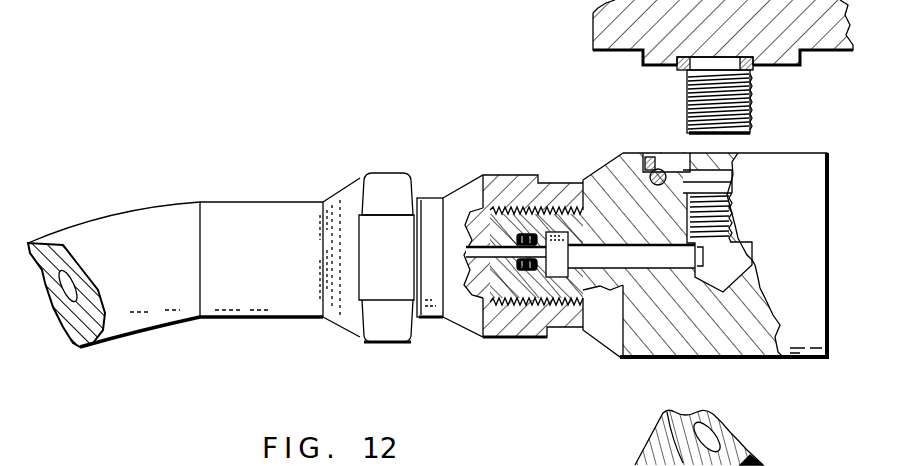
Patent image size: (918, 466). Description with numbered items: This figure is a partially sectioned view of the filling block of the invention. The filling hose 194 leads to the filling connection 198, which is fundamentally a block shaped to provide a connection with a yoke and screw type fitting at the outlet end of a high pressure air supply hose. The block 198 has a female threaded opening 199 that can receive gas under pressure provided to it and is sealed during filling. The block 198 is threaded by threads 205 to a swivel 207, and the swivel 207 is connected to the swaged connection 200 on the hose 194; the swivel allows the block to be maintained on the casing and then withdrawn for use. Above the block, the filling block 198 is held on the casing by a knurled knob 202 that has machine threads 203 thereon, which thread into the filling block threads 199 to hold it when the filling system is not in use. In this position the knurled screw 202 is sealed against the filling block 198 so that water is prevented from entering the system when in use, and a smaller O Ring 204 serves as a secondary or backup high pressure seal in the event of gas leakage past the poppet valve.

The hose 194 is at (108, 228).
The filling connection 198 is at (757, 357).
The female threaded opening 199 is at (690, 168).
The swaged connection 200 is at (257, 287).
The knurled knob 202 is at (613, 33).
The machine threads 203 is at (747, 110).
The smaller O Ring 204 is at (687, 72).
The threads 205 is at (573, 330).
The swivel 207 is at (507, 337).